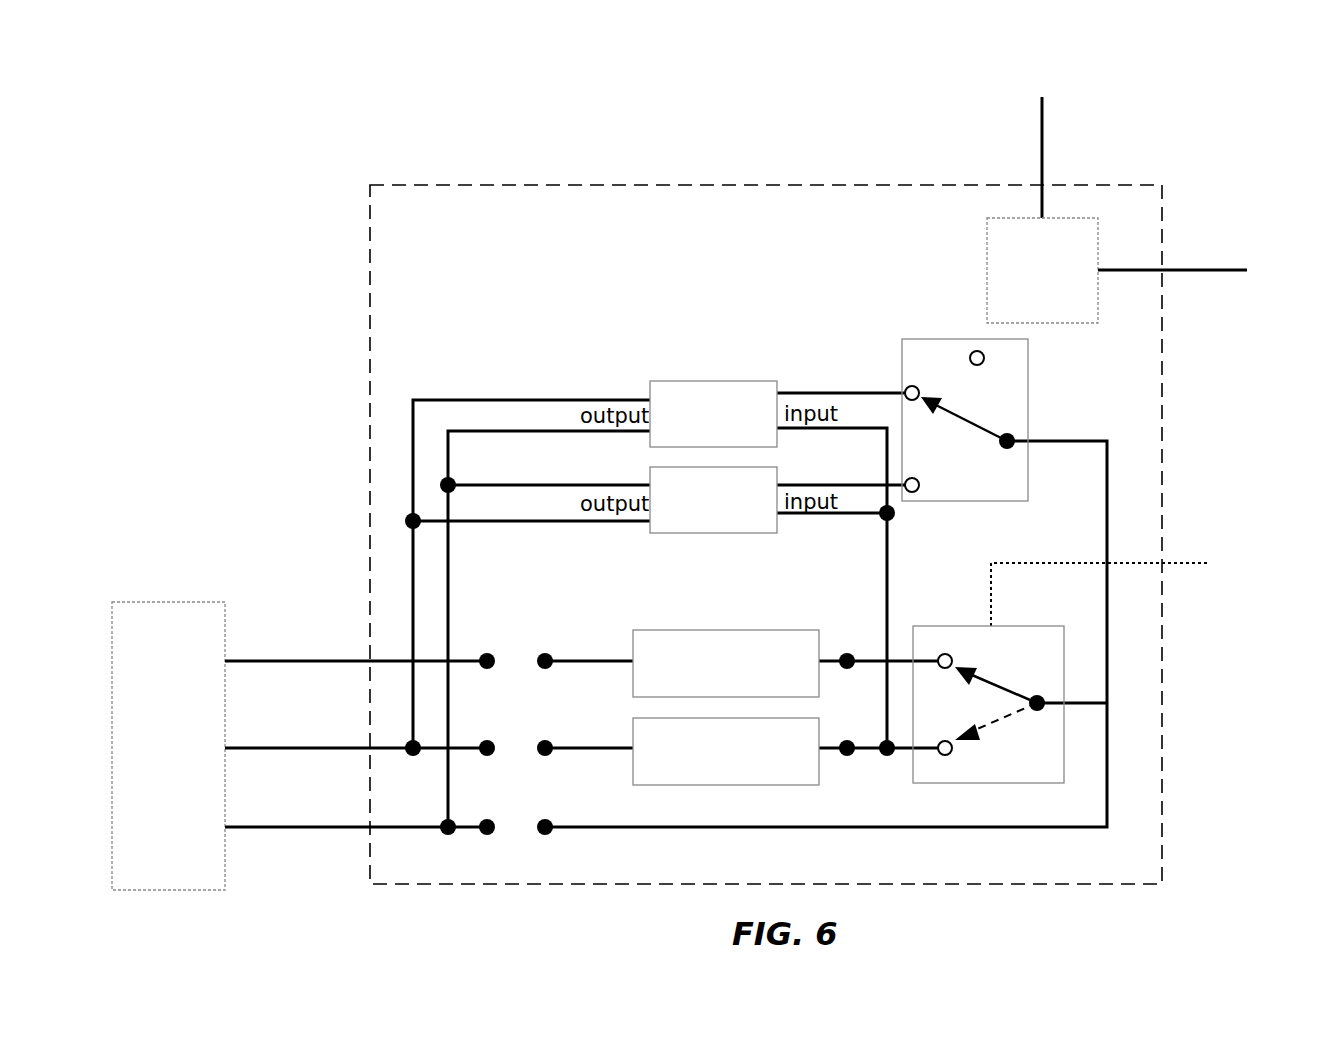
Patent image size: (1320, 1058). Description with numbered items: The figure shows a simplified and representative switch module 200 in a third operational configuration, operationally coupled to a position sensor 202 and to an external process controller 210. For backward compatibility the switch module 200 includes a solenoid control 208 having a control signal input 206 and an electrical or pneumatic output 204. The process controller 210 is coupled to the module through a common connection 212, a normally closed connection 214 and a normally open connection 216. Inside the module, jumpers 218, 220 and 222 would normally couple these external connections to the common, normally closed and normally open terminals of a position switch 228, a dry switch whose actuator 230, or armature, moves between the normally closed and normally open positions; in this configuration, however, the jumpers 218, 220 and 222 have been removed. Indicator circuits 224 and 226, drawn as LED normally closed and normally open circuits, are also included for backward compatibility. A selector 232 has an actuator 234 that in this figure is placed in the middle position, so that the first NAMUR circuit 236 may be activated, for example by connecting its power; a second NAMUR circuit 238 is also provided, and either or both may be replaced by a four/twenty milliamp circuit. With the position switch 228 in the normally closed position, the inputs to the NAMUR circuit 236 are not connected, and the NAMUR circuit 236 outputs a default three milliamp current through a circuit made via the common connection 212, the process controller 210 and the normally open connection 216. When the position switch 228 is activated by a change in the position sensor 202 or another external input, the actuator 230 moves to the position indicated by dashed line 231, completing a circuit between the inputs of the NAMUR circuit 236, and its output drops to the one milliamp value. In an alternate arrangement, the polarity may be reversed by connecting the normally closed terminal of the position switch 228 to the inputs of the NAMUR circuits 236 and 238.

The switch module 200 is at (370, 443).
The position sensor 202 is at (1192, 565).
The electrical or pneumatic output 204 is at (1210, 270).
The control signal input 206 is at (1042, 158).
The solenoid control 208 is at (987, 290).
The process controller 210 is at (192, 602).
The common connection 212 is at (343, 834).
The normally closed connection 214 is at (343, 664).
The normally open connection 216 is at (343, 752).
The jumper 218 is at (540, 636).
The jumper 220 is at (536, 730).
The jumper 222 is at (541, 802).
The indicator circuit 224 is at (782, 630).
The indicator circuit 226 is at (735, 785).
The position switch 228 is at (990, 783).
The actuator 230 is at (993, 680).
The dashed line 231 is at (988, 728).
The selector 232 is at (975, 503).
The actuator 234 is at (965, 421).
The first NAMUR circuit 236 is at (713, 381).
The second NAMUR circuit 238 is at (708, 533).